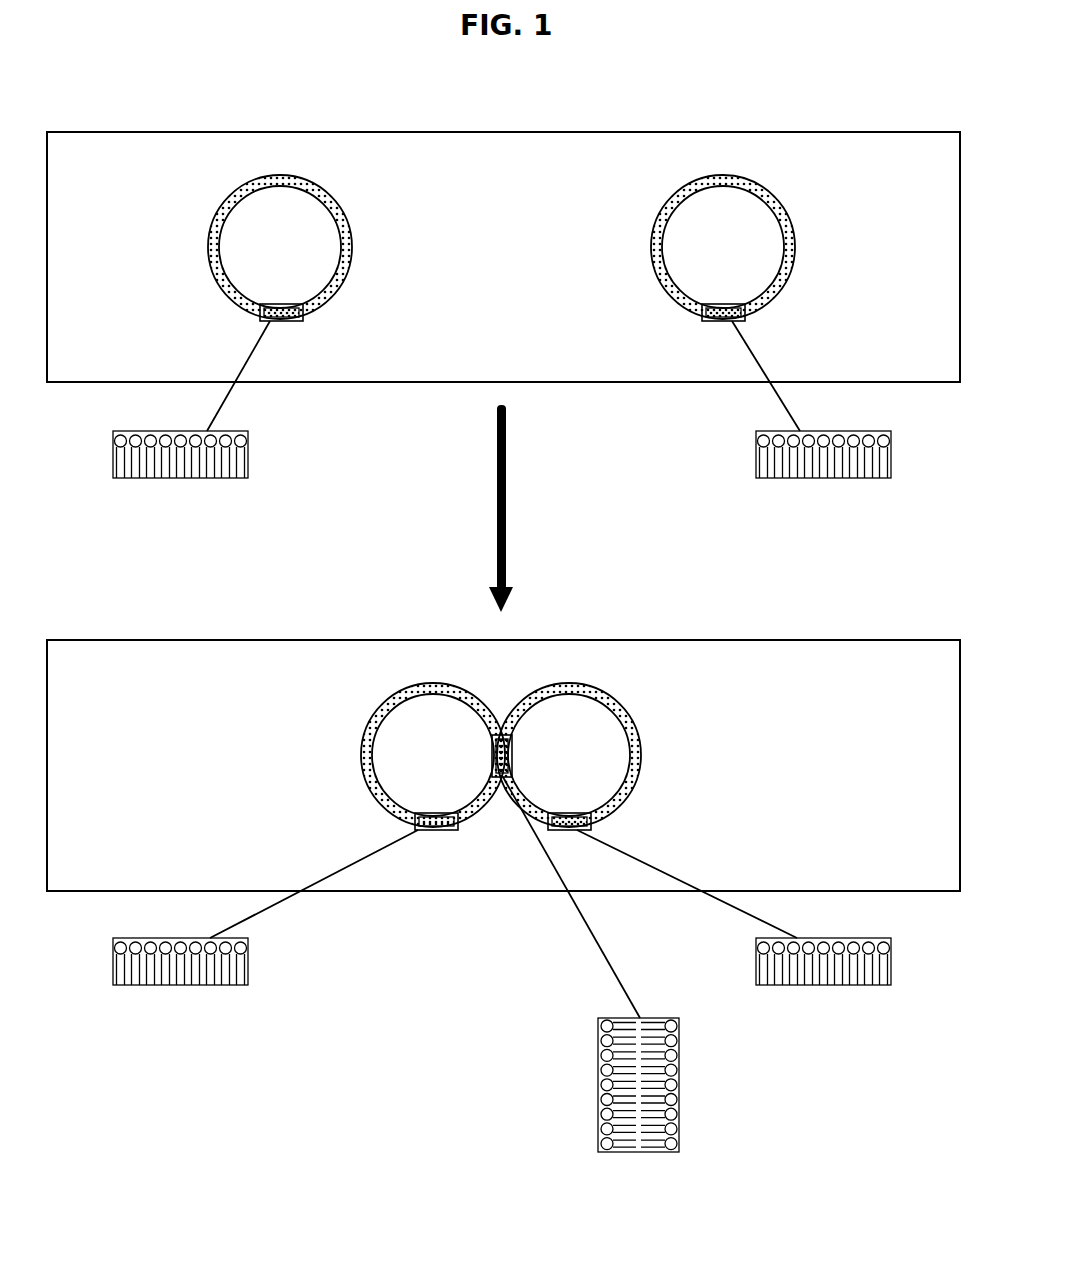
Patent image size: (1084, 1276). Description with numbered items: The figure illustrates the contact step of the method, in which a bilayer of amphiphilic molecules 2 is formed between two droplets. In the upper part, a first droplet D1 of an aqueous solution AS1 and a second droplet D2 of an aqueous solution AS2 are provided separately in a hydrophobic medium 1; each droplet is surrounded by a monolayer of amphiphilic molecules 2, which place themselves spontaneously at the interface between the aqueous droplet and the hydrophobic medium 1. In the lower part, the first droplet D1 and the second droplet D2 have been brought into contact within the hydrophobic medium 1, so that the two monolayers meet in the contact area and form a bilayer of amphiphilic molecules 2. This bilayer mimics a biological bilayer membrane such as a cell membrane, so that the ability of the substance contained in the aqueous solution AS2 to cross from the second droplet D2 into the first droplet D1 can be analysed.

The hydrophobic medium 1 is at (622, 160).
The amphiphilic molecules 2 is at (166, 447).
The first droplet D1 is at (333, 189).
The second droplet D2 is at (776, 189).
The aqueous solution AS1 is at (356, 501).
The aqueous solution AS2 is at (646, 501).